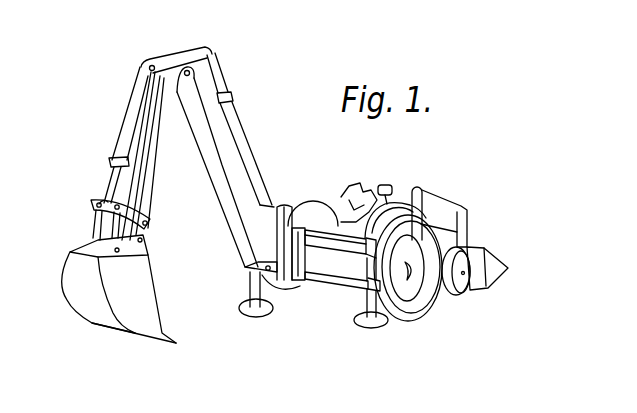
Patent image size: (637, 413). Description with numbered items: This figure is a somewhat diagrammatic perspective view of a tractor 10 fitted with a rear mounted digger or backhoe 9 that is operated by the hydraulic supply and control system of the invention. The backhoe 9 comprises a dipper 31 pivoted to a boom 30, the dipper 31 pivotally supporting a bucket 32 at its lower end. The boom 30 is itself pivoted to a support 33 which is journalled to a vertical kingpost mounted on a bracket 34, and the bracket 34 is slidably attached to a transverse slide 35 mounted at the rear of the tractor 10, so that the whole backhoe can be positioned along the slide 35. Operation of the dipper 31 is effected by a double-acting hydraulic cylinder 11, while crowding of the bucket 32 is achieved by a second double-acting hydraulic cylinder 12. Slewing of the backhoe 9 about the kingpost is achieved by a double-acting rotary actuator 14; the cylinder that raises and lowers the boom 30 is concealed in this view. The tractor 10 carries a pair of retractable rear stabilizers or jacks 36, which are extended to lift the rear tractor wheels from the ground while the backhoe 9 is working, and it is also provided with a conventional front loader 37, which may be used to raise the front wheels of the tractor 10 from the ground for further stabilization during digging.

The digger or backhoe 9 is at (229, 85).
The tractor 10 is at (364, 195).
The double-acting hydraulic cylinder 11 is at (246, 145).
The double-acting hydraulic cylinder 12 is at (124, 132).
The double-acting rotary actuator 14 is at (286, 202).
The boom 30 is at (236, 203).
The dipper 31 is at (152, 199).
The bucket 32 is at (148, 305).
The support 33 is at (283, 276).
The bracket 34 is at (313, 262).
The transverse slide 35 is at (345, 288).
The rear stabilizers or jacks 36 is at (248, 317).
The front loader 37 is at (466, 222).